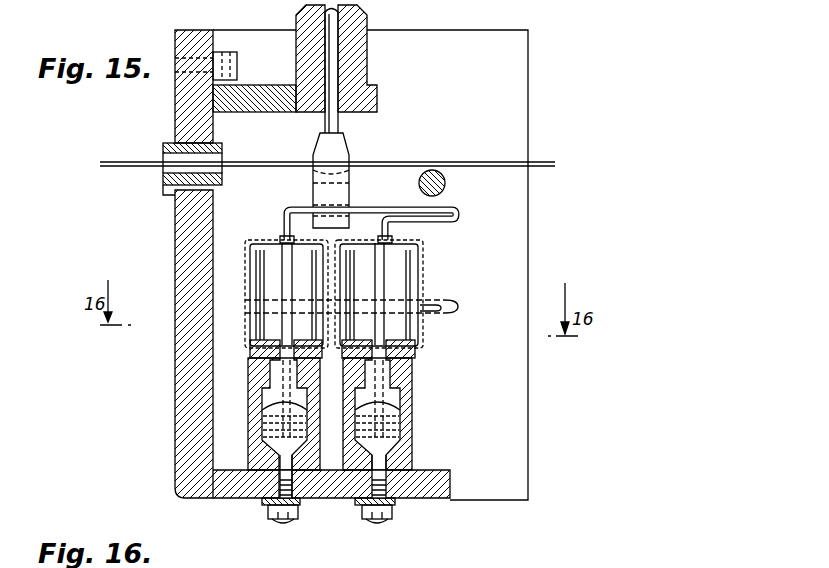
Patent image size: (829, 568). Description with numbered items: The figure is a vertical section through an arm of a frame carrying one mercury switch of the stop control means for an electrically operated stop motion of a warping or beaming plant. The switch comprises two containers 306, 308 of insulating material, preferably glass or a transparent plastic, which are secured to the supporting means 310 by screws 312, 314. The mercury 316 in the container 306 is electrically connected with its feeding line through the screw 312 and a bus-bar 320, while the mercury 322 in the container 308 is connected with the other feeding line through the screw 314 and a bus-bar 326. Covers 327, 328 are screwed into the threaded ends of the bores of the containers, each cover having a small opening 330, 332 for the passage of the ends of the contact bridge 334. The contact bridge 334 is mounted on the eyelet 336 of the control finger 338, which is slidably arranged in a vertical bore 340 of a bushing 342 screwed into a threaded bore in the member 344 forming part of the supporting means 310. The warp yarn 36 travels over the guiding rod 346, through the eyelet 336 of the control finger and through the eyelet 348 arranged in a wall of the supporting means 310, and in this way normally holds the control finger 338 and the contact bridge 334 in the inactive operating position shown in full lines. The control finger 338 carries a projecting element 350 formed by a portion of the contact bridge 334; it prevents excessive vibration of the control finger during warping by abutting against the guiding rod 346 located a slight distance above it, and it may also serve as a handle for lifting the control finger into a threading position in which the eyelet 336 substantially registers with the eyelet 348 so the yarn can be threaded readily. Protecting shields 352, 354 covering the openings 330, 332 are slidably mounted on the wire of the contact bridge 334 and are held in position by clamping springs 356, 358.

The warp yarn 36 is at (551, 163).
The container 306 is at (258, 440).
The container 308 is at (412, 441).
The supporting means 310 is at (204, 380).
The screw 312 is at (262, 478).
The screw 314 is at (412, 462).
The mercury 316 is at (262, 421).
The bus-bar 320 is at (272, 512).
The mercury 322 is at (412, 419).
The bus-bar 326 is at (392, 512).
The cover 327 is at (250, 352).
The cover 328 is at (415, 352).
The opening 330 is at (283, 332).
The opening 332 is at (450, 314).
The contact bridge 334 is at (382, 199).
The eyelet 336 is at (313, 192).
The control finger 338 is at (322, 134).
The vertical bore 340 is at (300, 6).
The bushing 342 is at (360, 25).
The member 344 is at (267, 85).
The guiding rod 346 is at (446, 183).
The eyelet 348 is at (165, 145).
The projecting element 350 is at (446, 210).
The protecting shield 352 is at (246, 285).
The protecting shield 354 is at (423, 273).
The clamping spring 356 is at (283, 238).
The clamping spring 358 is at (428, 224).